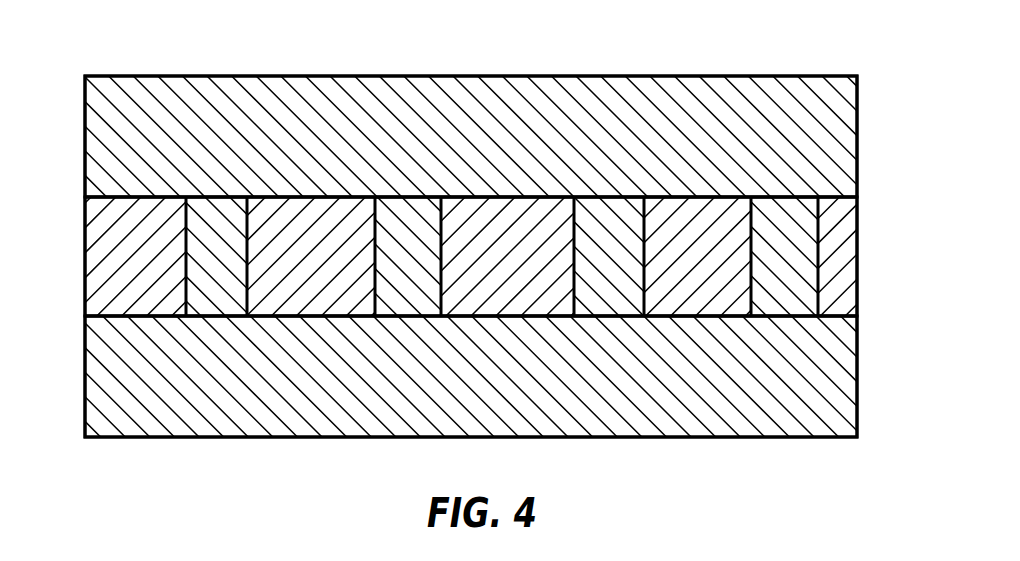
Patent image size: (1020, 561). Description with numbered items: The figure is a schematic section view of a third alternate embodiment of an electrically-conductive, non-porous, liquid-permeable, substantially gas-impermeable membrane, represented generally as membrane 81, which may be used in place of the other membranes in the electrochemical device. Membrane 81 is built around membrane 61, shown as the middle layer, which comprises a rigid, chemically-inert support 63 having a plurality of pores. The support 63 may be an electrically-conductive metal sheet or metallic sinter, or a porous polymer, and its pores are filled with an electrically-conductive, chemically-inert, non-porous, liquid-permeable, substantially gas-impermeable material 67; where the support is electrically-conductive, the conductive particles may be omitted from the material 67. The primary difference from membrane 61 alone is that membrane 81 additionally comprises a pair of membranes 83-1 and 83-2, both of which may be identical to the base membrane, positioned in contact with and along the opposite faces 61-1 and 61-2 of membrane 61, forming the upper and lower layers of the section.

The membrane 81 is at (183, 58).
The membrane 83-1 is at (737, 87).
The membrane 83-2 is at (707, 430).
The membrane 61 is at (72, 242).
The face of membrane 61 61-1 is at (528, 197).
The face of membrane 61 61-2 is at (267, 316).
The support 63 is at (292, 245).
The material 67 is at (802, 252).